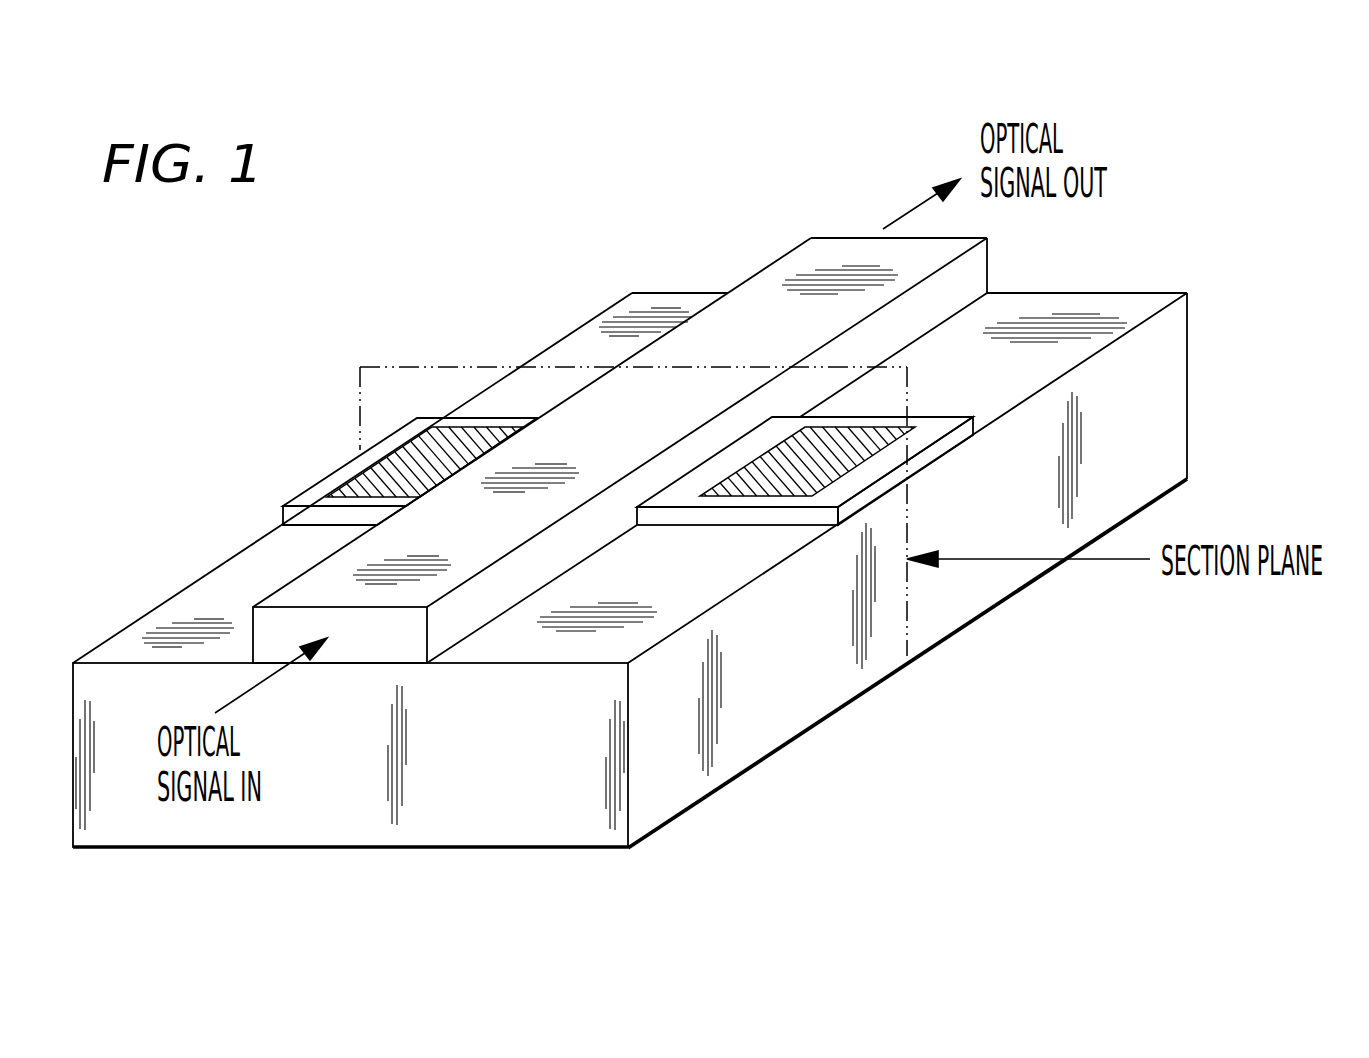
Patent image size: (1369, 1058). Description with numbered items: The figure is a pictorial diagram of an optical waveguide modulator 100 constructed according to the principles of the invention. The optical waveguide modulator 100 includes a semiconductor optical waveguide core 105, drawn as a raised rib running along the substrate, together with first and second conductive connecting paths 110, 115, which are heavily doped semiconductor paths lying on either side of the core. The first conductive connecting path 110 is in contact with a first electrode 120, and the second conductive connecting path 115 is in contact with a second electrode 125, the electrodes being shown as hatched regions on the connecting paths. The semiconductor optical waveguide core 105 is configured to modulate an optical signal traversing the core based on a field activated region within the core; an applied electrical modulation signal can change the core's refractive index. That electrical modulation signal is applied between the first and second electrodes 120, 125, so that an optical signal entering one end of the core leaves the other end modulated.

The optical waveguide modulator 100 is at (1240, 186).
The semiconductor optical waveguide core 105 is at (570, 452).
The first conductive connecting path 110 is at (298, 491).
The second conductive connecting path 115 is at (905, 416).
The first electrode 120 is at (407, 451).
The second electrode 125 is at (777, 487).